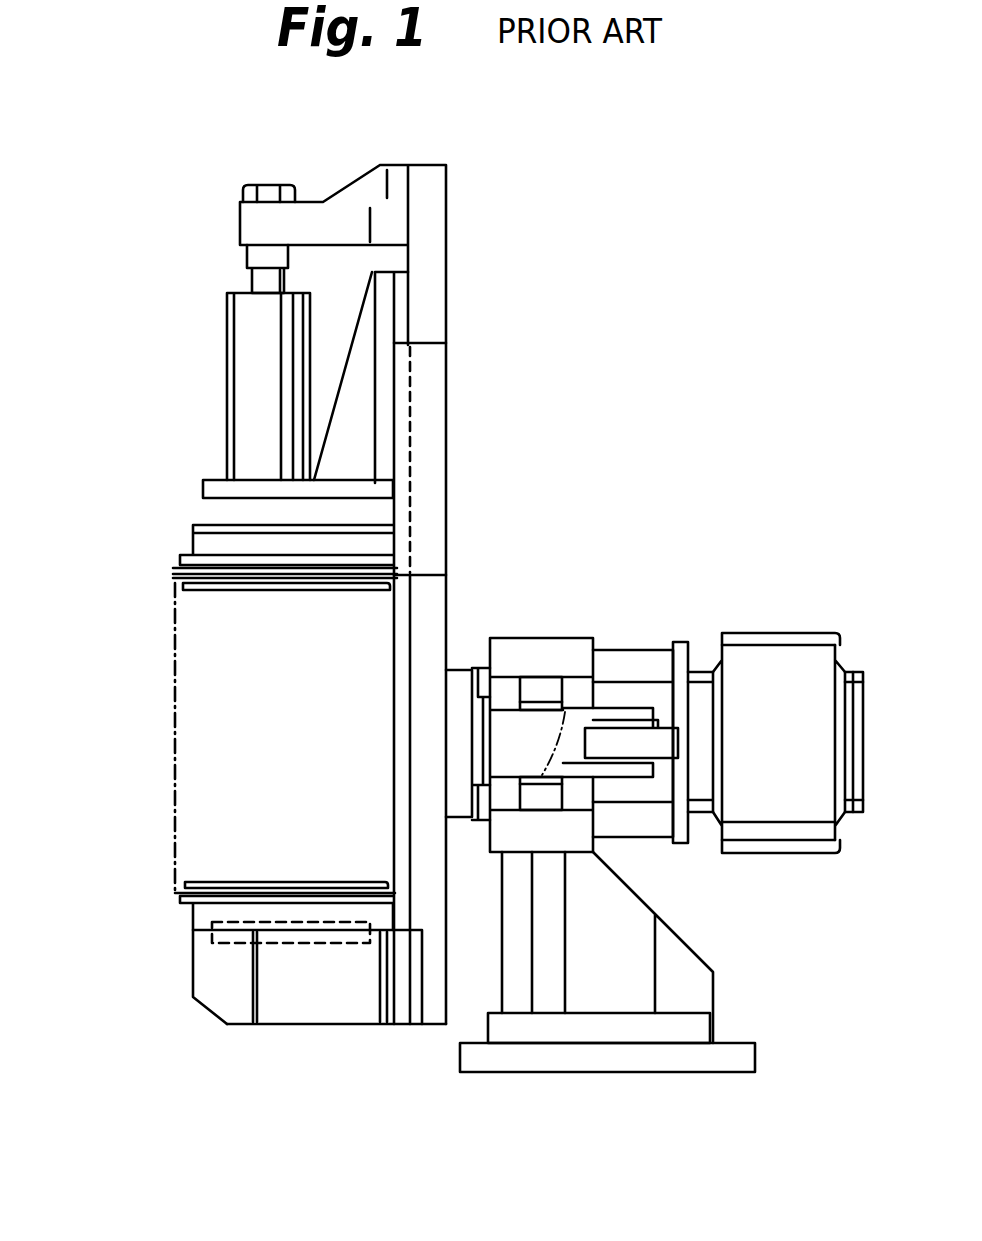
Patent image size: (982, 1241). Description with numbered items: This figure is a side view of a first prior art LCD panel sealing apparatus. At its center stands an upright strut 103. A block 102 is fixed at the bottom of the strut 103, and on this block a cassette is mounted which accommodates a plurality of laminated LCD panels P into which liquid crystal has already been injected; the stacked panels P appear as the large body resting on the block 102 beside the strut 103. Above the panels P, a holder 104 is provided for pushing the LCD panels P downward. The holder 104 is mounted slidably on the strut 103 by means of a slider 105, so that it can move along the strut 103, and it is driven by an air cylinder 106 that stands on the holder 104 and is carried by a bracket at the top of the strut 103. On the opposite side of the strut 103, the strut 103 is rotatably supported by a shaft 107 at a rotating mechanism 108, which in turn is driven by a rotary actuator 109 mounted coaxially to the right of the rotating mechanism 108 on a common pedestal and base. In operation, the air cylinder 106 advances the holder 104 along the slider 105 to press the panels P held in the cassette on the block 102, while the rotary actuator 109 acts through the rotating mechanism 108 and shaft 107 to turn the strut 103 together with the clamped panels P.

The block 102 is at (198, 1008).
The strut 103 is at (447, 240).
The holder 104 is at (205, 482).
The slider 105 is at (447, 425).
The air cylinder 106 is at (235, 390).
The shaft 107 is at (455, 668).
The rotating mechanism 108 is at (550, 637).
The rotary actuator 109 is at (770, 633).
The LCD panels P is at (173, 573).